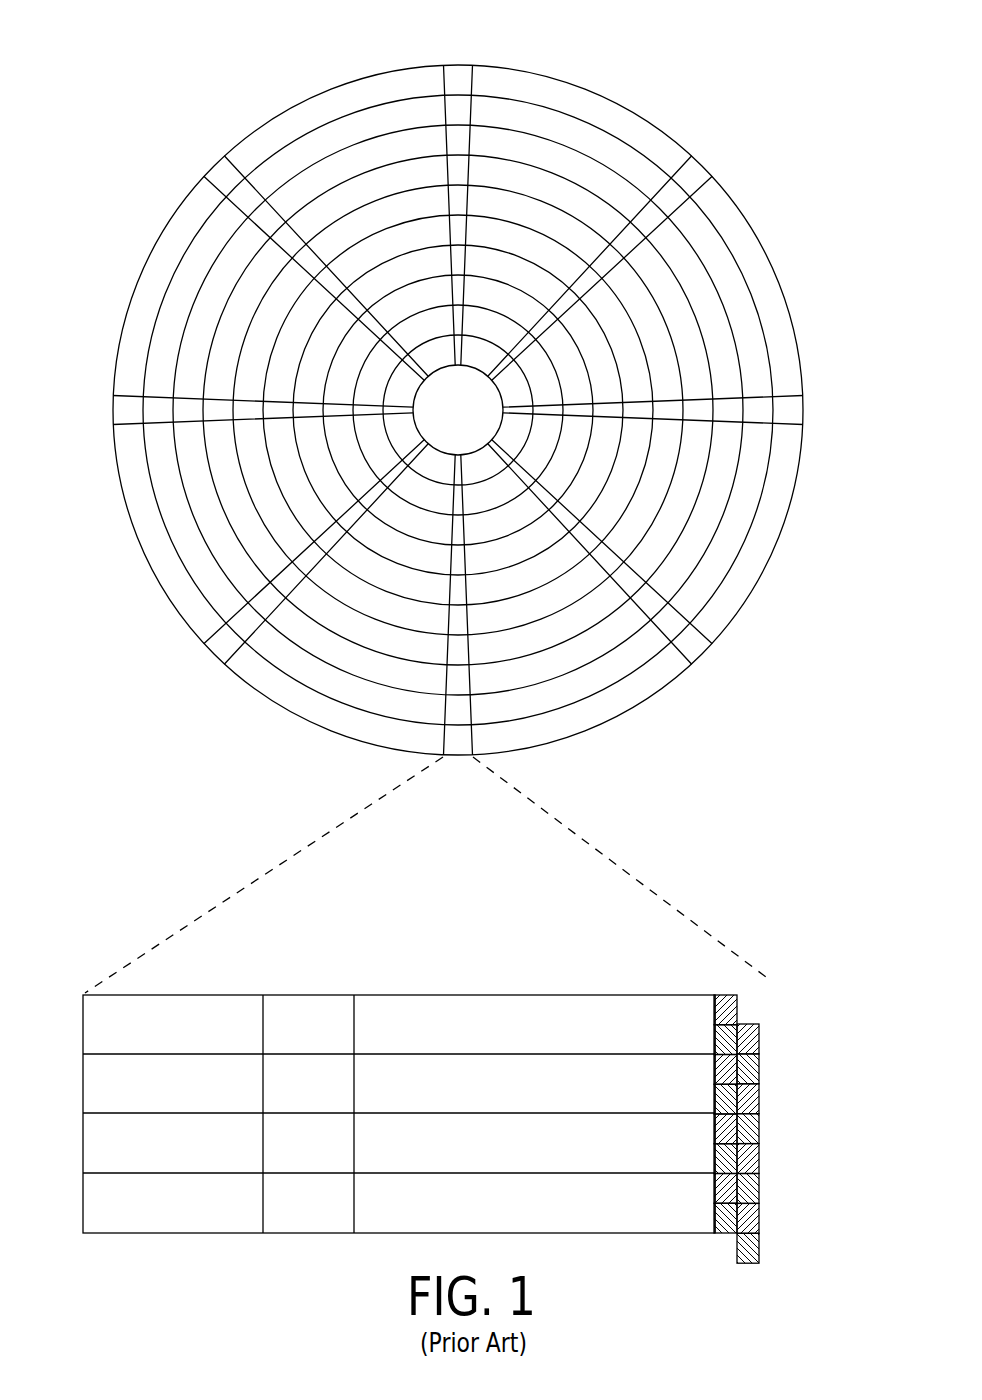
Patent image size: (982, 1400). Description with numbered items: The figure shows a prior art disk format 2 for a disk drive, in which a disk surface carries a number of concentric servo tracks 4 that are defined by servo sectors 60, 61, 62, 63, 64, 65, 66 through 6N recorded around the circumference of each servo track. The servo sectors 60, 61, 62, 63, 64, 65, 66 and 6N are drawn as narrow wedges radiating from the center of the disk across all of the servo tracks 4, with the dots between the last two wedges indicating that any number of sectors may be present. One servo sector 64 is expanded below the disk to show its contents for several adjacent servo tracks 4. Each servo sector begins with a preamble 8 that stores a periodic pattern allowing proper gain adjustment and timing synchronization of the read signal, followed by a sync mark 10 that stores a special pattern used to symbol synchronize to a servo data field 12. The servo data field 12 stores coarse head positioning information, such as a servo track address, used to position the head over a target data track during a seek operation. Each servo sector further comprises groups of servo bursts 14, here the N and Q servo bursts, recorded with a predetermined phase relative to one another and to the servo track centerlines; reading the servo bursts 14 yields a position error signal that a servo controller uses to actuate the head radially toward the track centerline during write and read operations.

The disk format 2 is at (207, 70).
The servo tracks 4 is at (577, 135).
The servo sector 60 is at (460, 77).
The servo sector 61 is at (700, 170).
The servo sector 62 is at (795, 410).
The servo sector 63 is at (693, 646).
The servo sector 64 is at (305, 840).
The servo sector 65 is at (222, 650).
The servo sector 66 is at (120, 408).
The servo sector 6N is at (222, 170).
The preamble 8 is at (182, 992).
The sync mark 10 is at (312, 992).
The servo data field 12 is at (522, 992).
The servo bursts 14 is at (752, 993).